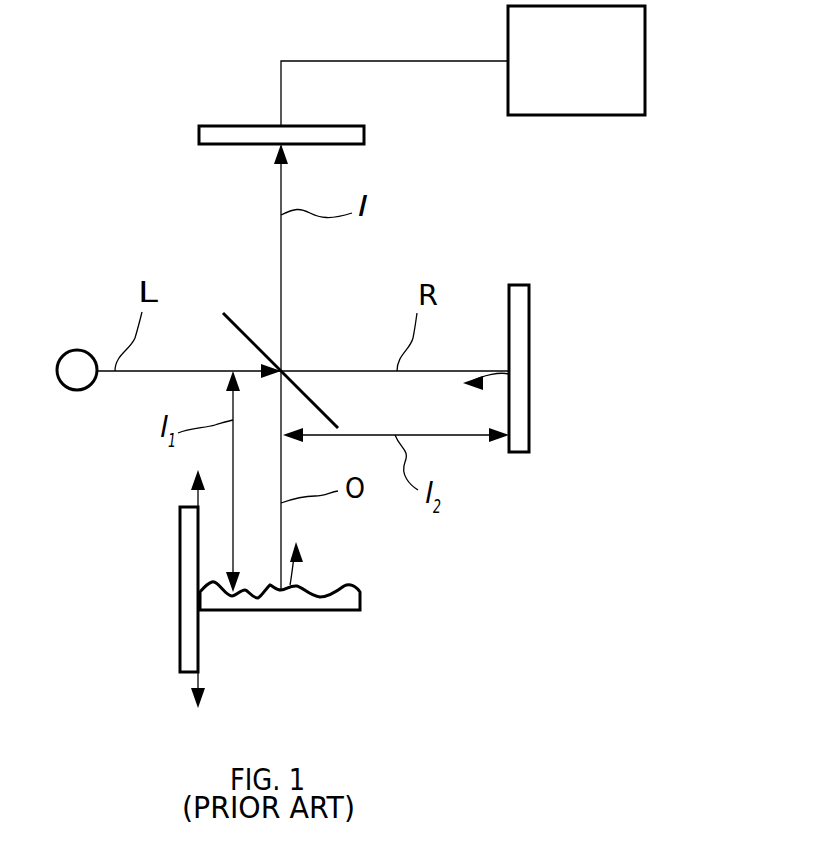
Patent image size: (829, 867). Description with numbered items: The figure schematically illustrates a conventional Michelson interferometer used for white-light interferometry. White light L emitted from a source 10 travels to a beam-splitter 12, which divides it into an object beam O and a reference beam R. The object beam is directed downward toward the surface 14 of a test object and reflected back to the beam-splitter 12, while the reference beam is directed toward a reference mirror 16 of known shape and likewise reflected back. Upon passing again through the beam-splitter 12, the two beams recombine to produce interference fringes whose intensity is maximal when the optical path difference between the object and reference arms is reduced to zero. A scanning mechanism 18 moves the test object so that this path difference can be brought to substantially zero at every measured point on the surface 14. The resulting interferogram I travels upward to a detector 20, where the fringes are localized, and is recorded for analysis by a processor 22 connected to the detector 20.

The source 10 is at (78, 378).
The beam-splitter 12 is at (338, 425).
The surface of a test object 14 is at (357, 590).
The reference mirror 16 is at (509, 452).
The scanning mechanism 18 is at (180, 588).
The detector 20 is at (364, 133).
The processor 22 is at (582, 105).